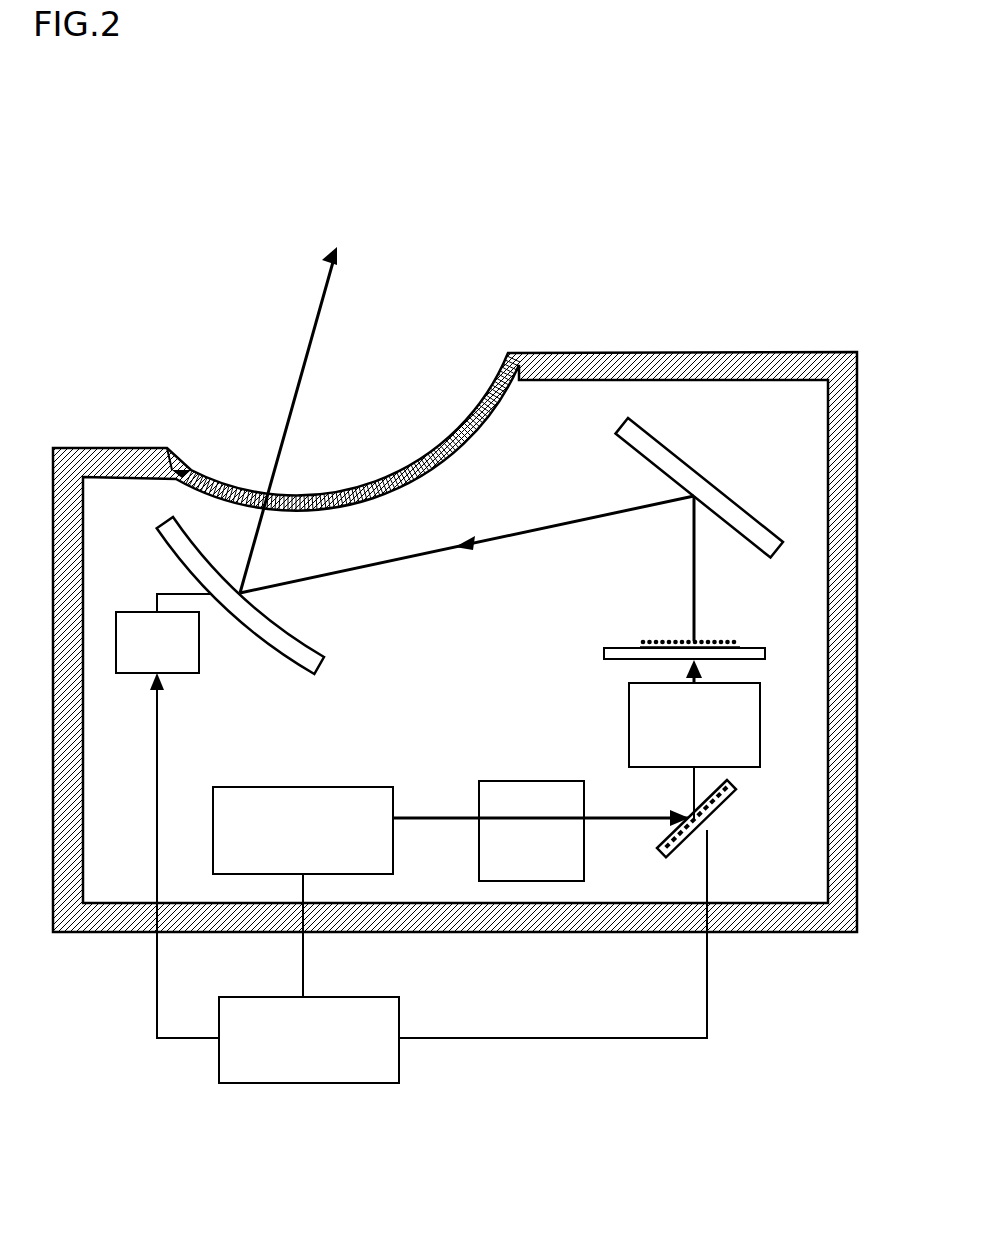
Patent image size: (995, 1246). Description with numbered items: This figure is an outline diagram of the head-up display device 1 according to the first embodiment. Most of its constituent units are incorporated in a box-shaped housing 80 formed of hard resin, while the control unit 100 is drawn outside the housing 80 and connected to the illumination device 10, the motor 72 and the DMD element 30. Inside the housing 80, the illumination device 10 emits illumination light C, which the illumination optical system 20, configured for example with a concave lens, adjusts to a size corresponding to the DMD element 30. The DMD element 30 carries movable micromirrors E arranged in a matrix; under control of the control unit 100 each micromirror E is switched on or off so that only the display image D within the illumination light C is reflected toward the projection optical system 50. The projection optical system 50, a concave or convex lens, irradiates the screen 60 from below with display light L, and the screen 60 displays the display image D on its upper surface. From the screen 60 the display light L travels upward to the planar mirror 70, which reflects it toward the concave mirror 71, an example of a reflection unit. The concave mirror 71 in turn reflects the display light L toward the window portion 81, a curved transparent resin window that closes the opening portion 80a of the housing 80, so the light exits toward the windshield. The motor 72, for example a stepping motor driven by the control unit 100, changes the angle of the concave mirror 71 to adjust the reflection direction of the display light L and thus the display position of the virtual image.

The head-up display device 1 is at (158, 368).
The illumination device 10 is at (226, 787).
The illumination optical system 20 is at (530, 781).
The DMD element 30 is at (657, 849).
The projection optical system 50 is at (762, 718).
The screen 60 is at (604, 653).
The planar mirror 70 is at (742, 497).
The concave mirror 71 is at (300, 677).
The motor 72 is at (137, 610).
The housing 80 is at (570, 355).
The opening portion 80a is at (212, 470).
The window portion 81 is at (478, 407).
The control unit 100 is at (232, 997).
The illumination light C is at (444, 815).
The display image D is at (648, 640).
The micromirror E is at (683, 815).
The display light L is at (697, 594).